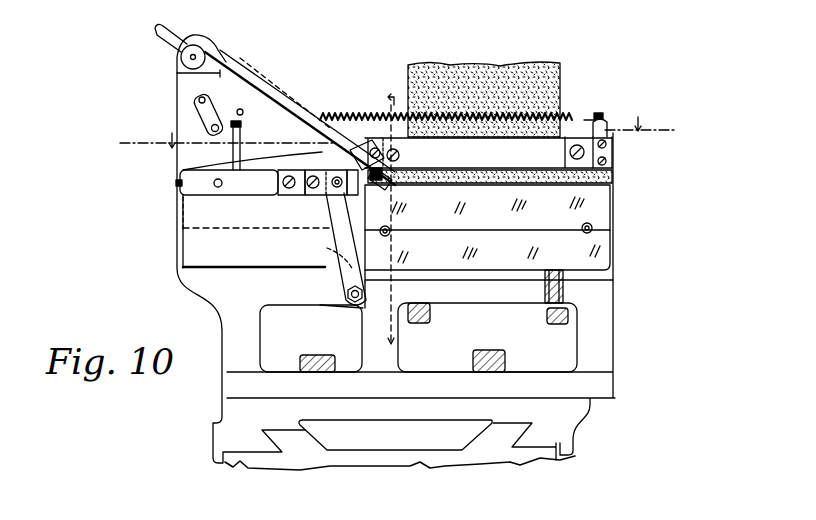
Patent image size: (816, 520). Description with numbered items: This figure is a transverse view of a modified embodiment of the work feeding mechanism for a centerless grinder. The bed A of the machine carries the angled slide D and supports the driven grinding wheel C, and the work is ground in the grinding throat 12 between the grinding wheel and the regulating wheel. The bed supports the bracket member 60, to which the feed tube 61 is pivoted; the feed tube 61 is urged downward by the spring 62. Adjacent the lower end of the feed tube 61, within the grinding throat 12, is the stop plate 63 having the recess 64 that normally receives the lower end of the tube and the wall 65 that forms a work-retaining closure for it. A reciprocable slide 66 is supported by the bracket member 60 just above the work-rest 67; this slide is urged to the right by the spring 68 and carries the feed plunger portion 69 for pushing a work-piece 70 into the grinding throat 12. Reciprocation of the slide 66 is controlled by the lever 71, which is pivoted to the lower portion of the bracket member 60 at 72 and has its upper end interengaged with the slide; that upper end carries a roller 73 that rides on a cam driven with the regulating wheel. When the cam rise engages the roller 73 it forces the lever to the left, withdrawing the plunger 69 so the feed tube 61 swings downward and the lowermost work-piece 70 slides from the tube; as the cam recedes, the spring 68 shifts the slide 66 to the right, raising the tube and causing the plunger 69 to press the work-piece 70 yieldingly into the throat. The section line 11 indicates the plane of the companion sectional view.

The bracket member 60 is at (185, 123).
The feed tube 61 is at (268, 100).
The spring 62 is at (222, 70).
The stop plate 63 is at (418, 152).
The recess 64 is at (357, 150).
The wall 65 is at (390, 167).
The reciprocable slide 66 is at (203, 181).
The work-rest 67 is at (600, 215).
The spring 68 is at (573, 112).
The feed plunger portion 69 is at (332, 232).
The work-piece 70 is at (376, 186).
The lever 71 is at (347, 248).
The pivot 72 is at (350, 288).
The roller 73 is at (200, 157).
The section line 11- 11 is at (397, 135).
The grinding throat 12 is at (419, 343).
The grinding wheel C is at (560, 68).
The angled slide D is at (565, 417).
The bed A is at (550, 456).